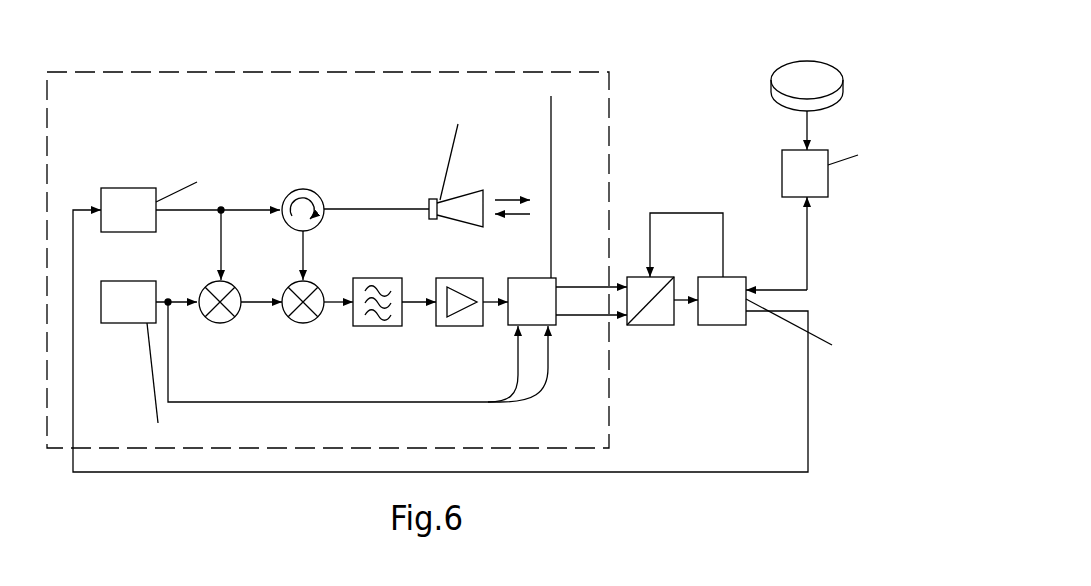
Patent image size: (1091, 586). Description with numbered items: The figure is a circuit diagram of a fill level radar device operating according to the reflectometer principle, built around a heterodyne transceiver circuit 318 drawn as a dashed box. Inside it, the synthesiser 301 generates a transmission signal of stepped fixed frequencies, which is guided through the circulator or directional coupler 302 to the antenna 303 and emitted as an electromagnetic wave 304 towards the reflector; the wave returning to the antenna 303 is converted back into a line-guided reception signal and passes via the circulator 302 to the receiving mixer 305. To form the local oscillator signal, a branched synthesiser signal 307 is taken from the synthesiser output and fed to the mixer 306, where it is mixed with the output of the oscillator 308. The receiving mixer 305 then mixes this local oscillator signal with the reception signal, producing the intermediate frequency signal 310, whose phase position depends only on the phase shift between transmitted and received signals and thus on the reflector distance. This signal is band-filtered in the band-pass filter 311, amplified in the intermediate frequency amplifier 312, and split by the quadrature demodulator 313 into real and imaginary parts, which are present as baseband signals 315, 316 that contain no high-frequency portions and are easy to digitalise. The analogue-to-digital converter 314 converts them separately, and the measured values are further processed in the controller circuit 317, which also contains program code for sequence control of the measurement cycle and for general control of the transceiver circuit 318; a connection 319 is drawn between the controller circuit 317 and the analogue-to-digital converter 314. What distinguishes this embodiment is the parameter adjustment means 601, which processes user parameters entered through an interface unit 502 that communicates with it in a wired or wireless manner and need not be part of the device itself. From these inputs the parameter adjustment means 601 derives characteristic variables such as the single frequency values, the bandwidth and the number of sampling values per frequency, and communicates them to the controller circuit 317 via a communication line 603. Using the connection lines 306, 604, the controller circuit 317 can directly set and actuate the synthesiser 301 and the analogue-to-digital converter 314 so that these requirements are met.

The synthesiser 301 is at (143, 188).
The circulator or directional coupler 302 is at (300, 189).
The antenna 303 is at (427, 200).
The electromagnetic wave 304 is at (530, 160).
The receiving mixer 305 is at (305, 323).
The mixer / connection line (signal) 306 is at (222, 323).
The branched synthesiser signal 307 is at (212, 252).
The oscillator 308 is at (125, 323).
The intermediate frequency signal 310 is at (333, 298).
The band-pass filter 311 is at (393, 326).
The intermediate frequency amplifier 312 is at (462, 326).
The quadrature demodulator 313 is at (530, 277).
The analogue-to-digital converter 314 is at (660, 326).
The baseband signal (real part) 315 is at (589, 246).
The baseband signal (imaginary part) 316 is at (567, 322).
The controller circuit 317 is at (725, 326).
The transceiver circuit 318 is at (609, 107).
The clock line 319 is at (680, 298).
The interface unit 502 is at (805, 62).
The parameter adjustment means 601 is at (782, 150).
The communication line 603 is at (787, 289).
The connection line 604 is at (652, 212).